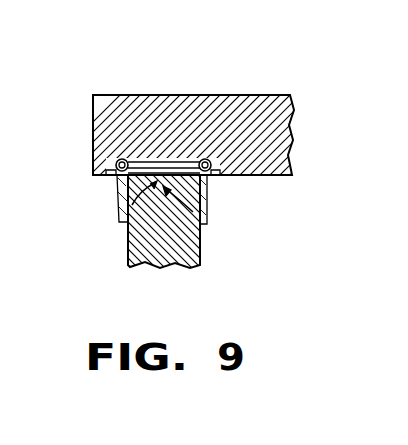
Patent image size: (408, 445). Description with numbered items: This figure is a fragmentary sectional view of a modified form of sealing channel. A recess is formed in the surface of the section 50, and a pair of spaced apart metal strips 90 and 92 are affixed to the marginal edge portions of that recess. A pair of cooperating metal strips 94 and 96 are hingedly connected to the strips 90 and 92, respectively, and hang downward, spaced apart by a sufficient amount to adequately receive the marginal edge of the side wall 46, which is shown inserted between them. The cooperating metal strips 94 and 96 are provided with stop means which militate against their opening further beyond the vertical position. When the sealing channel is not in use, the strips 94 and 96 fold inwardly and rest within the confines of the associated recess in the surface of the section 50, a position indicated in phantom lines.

The section 50 is at (145, 95).
The side wall 46 is at (132, 250).
The metal strip 90 is at (108, 176).
The metal strip 92 is at (218, 175).
The cooperating metal strip 94 is at (122, 213).
The cooperating metal strip 96 is at (207, 218).